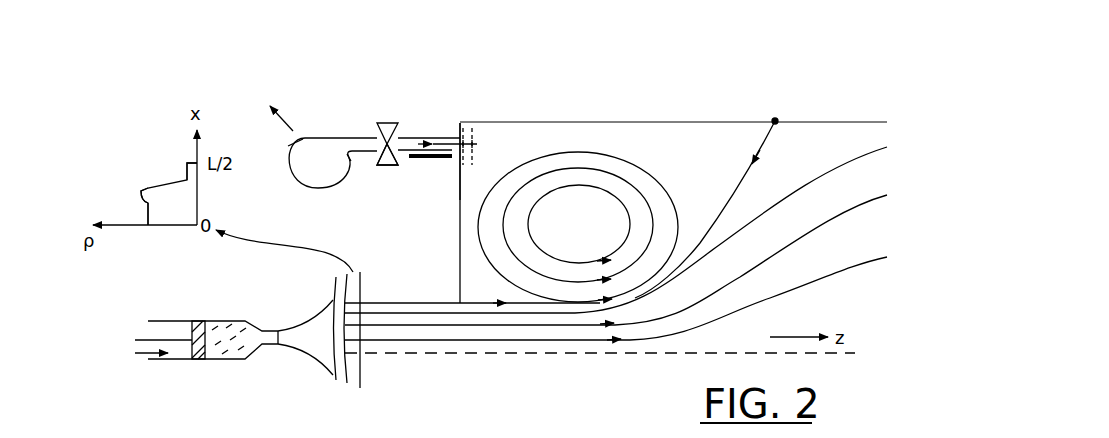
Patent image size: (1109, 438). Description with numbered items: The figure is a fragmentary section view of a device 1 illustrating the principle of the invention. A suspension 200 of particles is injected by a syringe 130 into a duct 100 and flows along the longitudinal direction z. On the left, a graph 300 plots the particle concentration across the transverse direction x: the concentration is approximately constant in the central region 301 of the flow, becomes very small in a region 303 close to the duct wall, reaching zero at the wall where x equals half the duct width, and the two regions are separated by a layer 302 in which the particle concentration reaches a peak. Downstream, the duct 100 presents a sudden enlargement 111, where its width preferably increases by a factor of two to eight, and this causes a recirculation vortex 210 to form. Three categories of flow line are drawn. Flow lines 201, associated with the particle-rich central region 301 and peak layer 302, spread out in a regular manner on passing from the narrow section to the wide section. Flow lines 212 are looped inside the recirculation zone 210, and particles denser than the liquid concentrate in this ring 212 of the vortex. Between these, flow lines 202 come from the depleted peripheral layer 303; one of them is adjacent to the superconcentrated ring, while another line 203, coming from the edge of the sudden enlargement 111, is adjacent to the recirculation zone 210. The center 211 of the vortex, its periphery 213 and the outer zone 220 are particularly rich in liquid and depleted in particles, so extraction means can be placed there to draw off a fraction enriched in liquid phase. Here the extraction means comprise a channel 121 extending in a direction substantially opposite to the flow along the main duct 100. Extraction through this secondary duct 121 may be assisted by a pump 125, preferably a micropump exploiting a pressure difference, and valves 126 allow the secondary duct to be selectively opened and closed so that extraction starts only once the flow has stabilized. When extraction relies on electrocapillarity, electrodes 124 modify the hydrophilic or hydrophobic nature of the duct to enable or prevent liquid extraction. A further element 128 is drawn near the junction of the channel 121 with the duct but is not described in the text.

The device 1 is at (674, 109).
The duct 100 is at (407, 303).
The sudden enlargement 111 is at (457, 302).
The channel 121 is at (416, 138).
The electrodes 124 is at (427, 158).
The pump 125 is at (328, 138).
The valves 126 is at (387, 166).
The connector 128 is at (479, 125).
The syringe 130 is at (215, 360).
The suspension 200 is at (517, 353).
The flow lines 201 is at (668, 300).
The flow lines 202 is at (552, 317).
The flow line 203 is at (776, 123).
The recirculation vortex 210 is at (635, 179).
The center of the vortex 211 is at (613, 230).
The ring of the vortex 212 is at (648, 248).
The periphery of the vortex 213 is at (580, 153).
The outer zone 220 is at (515, 140).
The graph 300 is at (144, 230).
The central region 301 is at (145, 218).
The layer 302 is at (140, 188).
The region close to the wall 303 is at (187, 172).